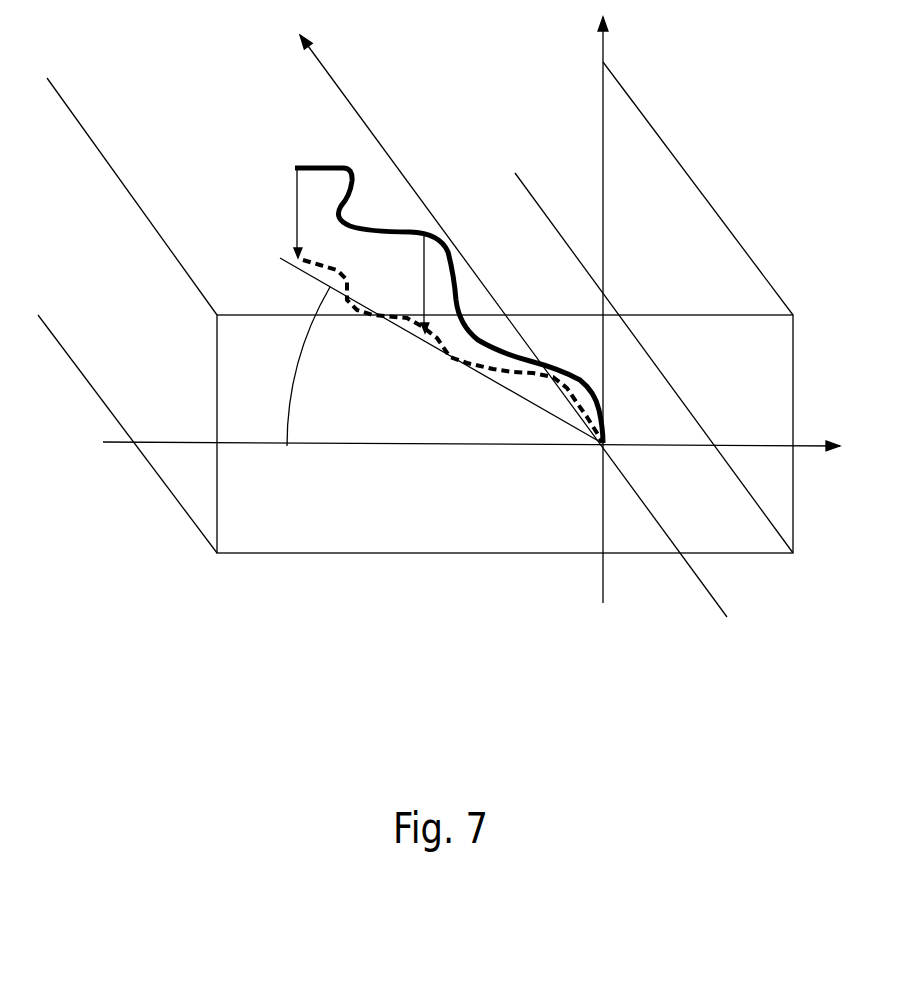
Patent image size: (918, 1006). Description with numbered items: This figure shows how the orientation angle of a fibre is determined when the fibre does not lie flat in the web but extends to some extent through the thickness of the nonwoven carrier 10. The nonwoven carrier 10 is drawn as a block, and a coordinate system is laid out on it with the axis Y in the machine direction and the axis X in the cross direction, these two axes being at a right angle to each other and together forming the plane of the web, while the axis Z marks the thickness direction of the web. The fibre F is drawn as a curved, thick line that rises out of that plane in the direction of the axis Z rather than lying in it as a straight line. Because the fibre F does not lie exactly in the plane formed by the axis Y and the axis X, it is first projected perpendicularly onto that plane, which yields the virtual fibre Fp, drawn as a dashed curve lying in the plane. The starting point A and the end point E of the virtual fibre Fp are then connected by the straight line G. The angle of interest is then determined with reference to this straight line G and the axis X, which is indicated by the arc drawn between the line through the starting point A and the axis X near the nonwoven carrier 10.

The nonwoven carrier 10 is at (260, 535).
The fibre F is at (304, 167).
The virtual fibre Fp is at (345, 283).
The end point E is at (280, 258).
The straight line G is at (510, 392).
The starting point A is at (607, 441).
The axis in the cross direction X is at (471, 463).
The axis in the machine direction Y is at (513, 322).
The z-direction axis Z is at (620, 310).